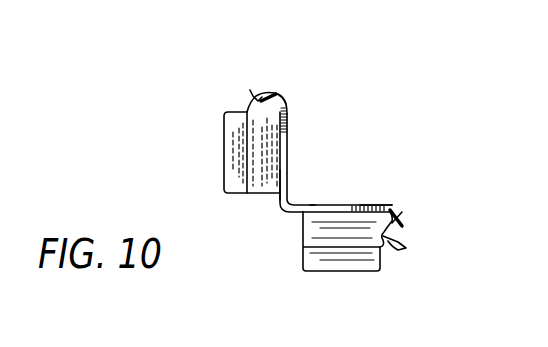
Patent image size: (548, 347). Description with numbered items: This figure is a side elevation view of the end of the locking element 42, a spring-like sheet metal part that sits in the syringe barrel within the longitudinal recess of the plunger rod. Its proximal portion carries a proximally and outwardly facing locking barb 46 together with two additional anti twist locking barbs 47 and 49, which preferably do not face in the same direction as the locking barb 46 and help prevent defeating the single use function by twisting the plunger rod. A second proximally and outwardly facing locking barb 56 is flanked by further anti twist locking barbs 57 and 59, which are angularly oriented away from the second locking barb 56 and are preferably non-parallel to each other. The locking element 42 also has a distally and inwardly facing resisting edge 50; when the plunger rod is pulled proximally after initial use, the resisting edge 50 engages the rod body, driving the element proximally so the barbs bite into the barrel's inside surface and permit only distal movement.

The locking element 42 is at (310, 158).
The locking barb 46 is at (404, 250).
The anti twist locking barb 47 is at (403, 219).
The anti twist locking barb 49 is at (390, 209).
The resisting edge 50 is at (307, 213).
The second locking barb 56 is at (250, 90).
The anti twist locking barb 57 is at (277, 95).
The anti twist locking barb 59 is at (286, 100).